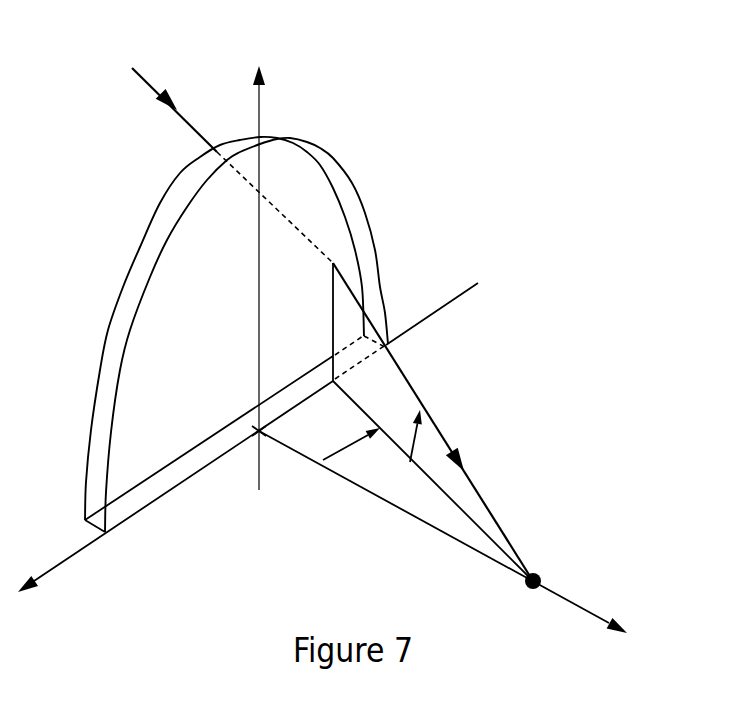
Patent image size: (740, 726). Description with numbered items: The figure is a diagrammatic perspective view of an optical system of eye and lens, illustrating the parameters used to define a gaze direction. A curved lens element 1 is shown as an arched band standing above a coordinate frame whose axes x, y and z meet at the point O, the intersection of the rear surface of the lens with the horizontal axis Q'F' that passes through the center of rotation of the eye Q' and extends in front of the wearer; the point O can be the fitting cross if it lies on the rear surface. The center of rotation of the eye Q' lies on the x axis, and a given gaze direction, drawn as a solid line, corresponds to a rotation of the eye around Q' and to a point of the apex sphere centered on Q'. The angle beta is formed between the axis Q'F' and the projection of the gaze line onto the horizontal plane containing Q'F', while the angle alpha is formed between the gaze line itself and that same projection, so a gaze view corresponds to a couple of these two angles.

The curved band-shaped optical element 1 is at (105, 339).
The point O is at (247, 457).
The x axis x is at (453, 532).
The y axis y is at (270, 263).
The z axis z is at (248, 453).
The center of rotation of the eye Q' is at (552, 568).